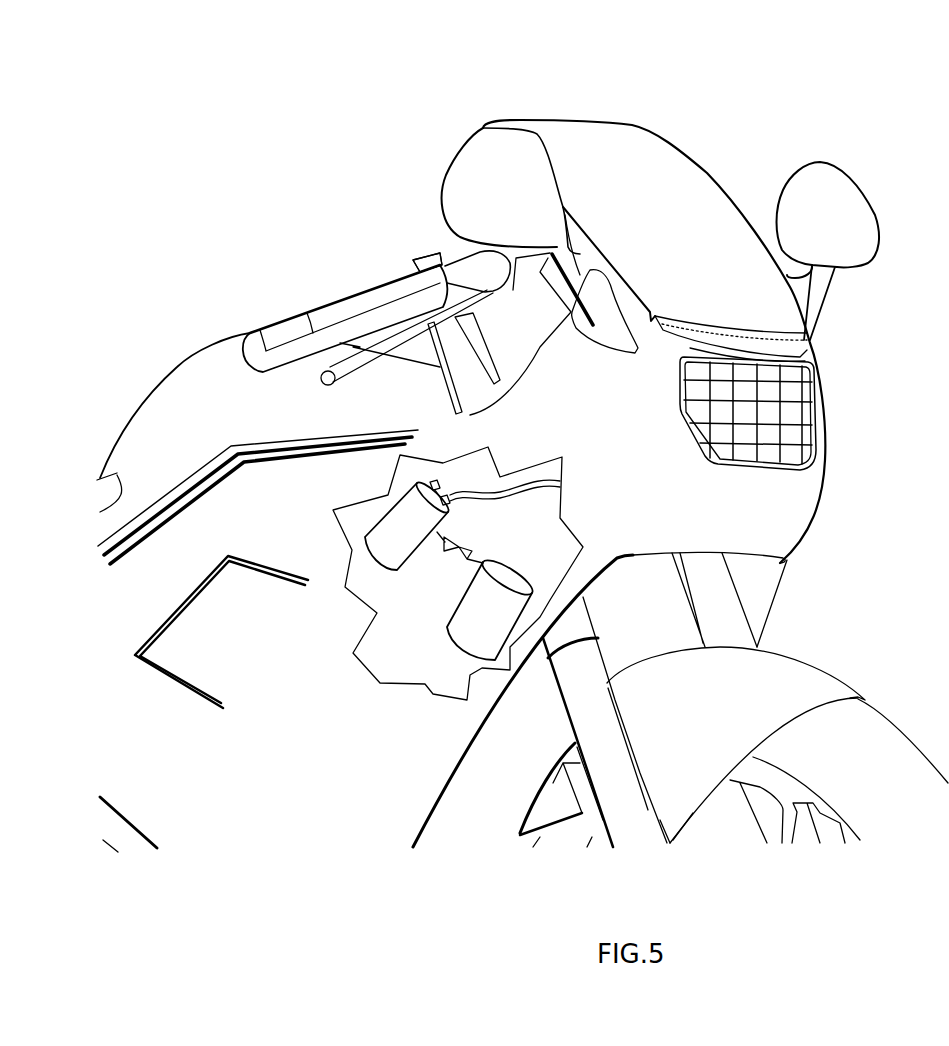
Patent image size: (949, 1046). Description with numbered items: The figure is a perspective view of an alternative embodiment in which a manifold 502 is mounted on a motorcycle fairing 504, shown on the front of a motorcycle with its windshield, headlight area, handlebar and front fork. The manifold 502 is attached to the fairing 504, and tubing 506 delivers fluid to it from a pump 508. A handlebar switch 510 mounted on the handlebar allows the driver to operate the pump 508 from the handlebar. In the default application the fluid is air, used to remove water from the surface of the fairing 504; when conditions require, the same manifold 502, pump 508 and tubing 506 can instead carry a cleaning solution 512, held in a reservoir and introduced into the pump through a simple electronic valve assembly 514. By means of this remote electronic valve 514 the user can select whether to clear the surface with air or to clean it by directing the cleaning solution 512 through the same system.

The manifold 502 is at (818, 340).
The fairing 504 is at (706, 193).
The tubing 506 is at (531, 498).
The pump 508 is at (360, 557).
The handlebar switch 510 is at (409, 246).
The cleaning solution 512 is at (455, 622).
The electronic valve assembly 514 is at (474, 665).